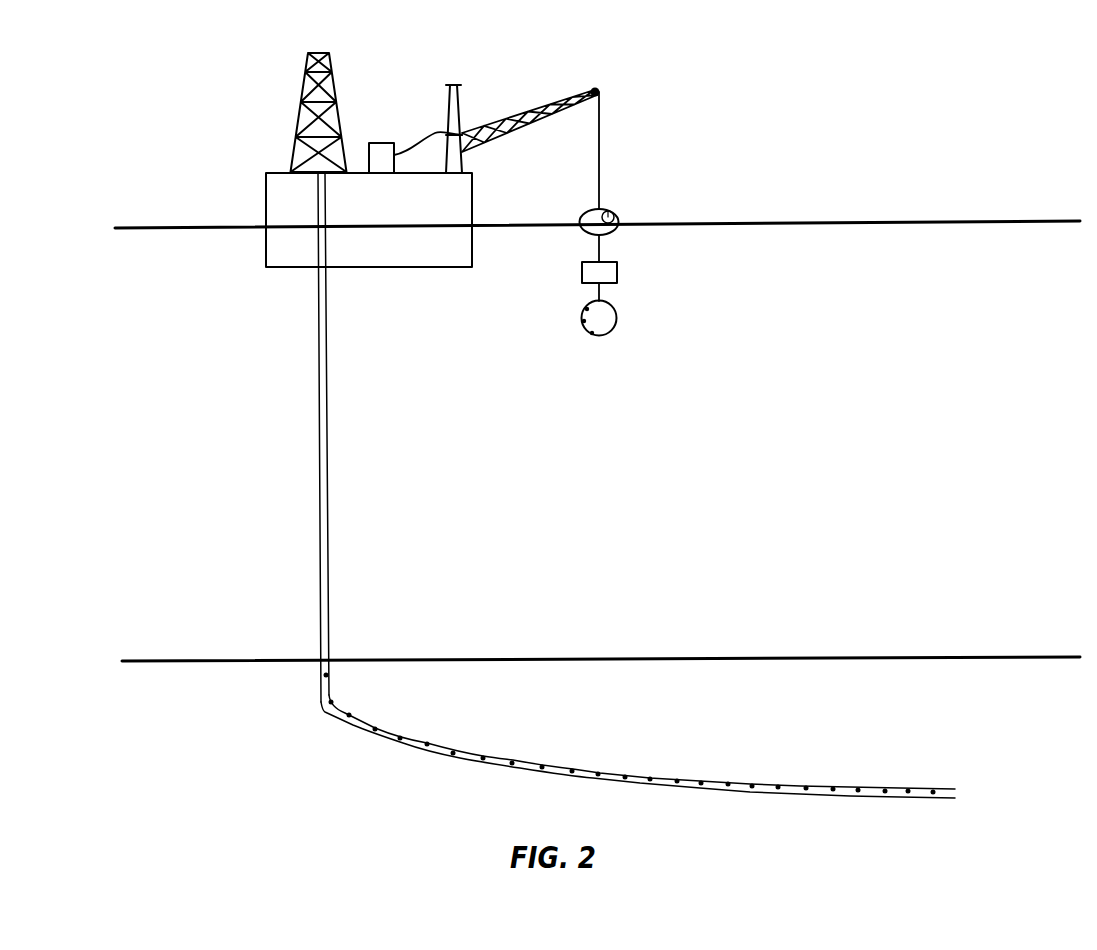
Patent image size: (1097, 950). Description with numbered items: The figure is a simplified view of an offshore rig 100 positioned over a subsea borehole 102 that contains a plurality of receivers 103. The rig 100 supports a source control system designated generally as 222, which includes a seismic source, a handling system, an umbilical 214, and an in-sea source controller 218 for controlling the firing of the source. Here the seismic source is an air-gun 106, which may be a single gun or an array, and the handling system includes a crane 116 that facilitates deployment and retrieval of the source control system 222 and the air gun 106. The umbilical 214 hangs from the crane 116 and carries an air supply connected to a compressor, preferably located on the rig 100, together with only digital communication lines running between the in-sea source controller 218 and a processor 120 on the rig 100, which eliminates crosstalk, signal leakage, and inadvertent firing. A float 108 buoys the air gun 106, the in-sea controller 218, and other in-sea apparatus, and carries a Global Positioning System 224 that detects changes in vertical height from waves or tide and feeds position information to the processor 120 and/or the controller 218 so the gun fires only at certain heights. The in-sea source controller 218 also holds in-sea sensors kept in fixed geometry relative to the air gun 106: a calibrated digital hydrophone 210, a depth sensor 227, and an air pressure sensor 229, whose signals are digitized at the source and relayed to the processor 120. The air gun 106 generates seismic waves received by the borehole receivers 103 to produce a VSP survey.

The offshore rig 100 is at (266, 198).
The subsea borehole 102 is at (396, 735).
The receivers 103 is at (428, 744).
The air-gun 106 is at (582, 275).
The float 108 is at (615, 229).
The crane 116 is at (516, 117).
The processor 120 is at (383, 143).
The calibrated digital hydrophone 210 is at (587, 309).
The umbilical 214 is at (598, 160).
The in-sea source controller 218 is at (618, 318).
The source control system 222 is at (688, 101).
The Global Positioning System 224 is at (613, 209).
The depth sensor 227 is at (584, 321).
The air pressure sensor 229 is at (592, 334).